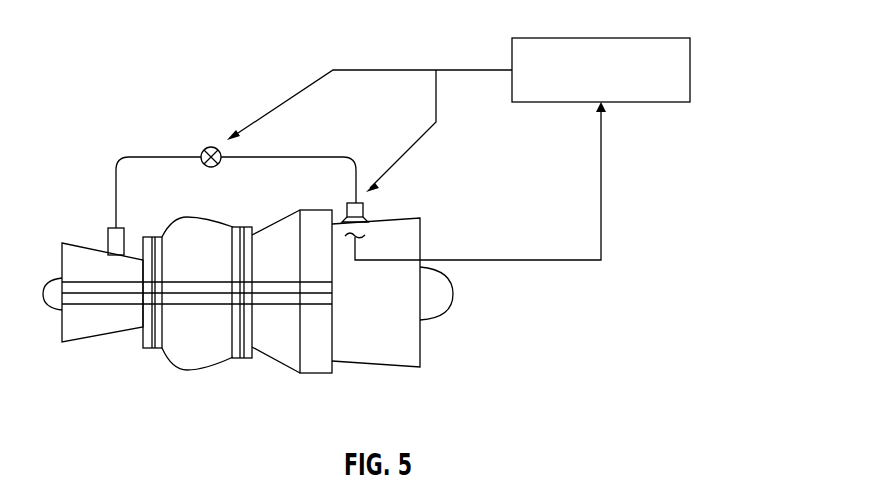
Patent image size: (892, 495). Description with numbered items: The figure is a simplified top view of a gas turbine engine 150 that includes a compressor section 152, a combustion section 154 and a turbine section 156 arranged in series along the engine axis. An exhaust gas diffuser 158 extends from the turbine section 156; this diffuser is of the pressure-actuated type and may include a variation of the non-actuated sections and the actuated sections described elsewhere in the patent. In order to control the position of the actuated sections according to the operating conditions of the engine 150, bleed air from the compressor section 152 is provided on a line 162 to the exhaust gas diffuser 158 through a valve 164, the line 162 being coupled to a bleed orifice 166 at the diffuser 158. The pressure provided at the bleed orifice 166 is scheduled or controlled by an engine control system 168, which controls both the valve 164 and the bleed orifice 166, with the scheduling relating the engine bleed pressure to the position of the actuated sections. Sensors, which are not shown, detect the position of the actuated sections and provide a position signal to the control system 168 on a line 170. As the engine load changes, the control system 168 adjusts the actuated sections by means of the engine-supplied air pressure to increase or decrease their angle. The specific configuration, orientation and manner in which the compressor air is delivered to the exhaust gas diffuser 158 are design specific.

The gas turbine engine 150 is at (373, 46).
The compressor section 152 is at (102, 337).
The combustion section 154 is at (200, 370).
The turbine section 156 is at (273, 352).
The exhaust gas diffuser 158 is at (383, 353).
The line 162 is at (267, 158).
The valve 164 is at (211, 167).
The bleed orifice 166 is at (365, 208).
The engine control system 168 is at (633, 37).
The line 170 is at (493, 258).